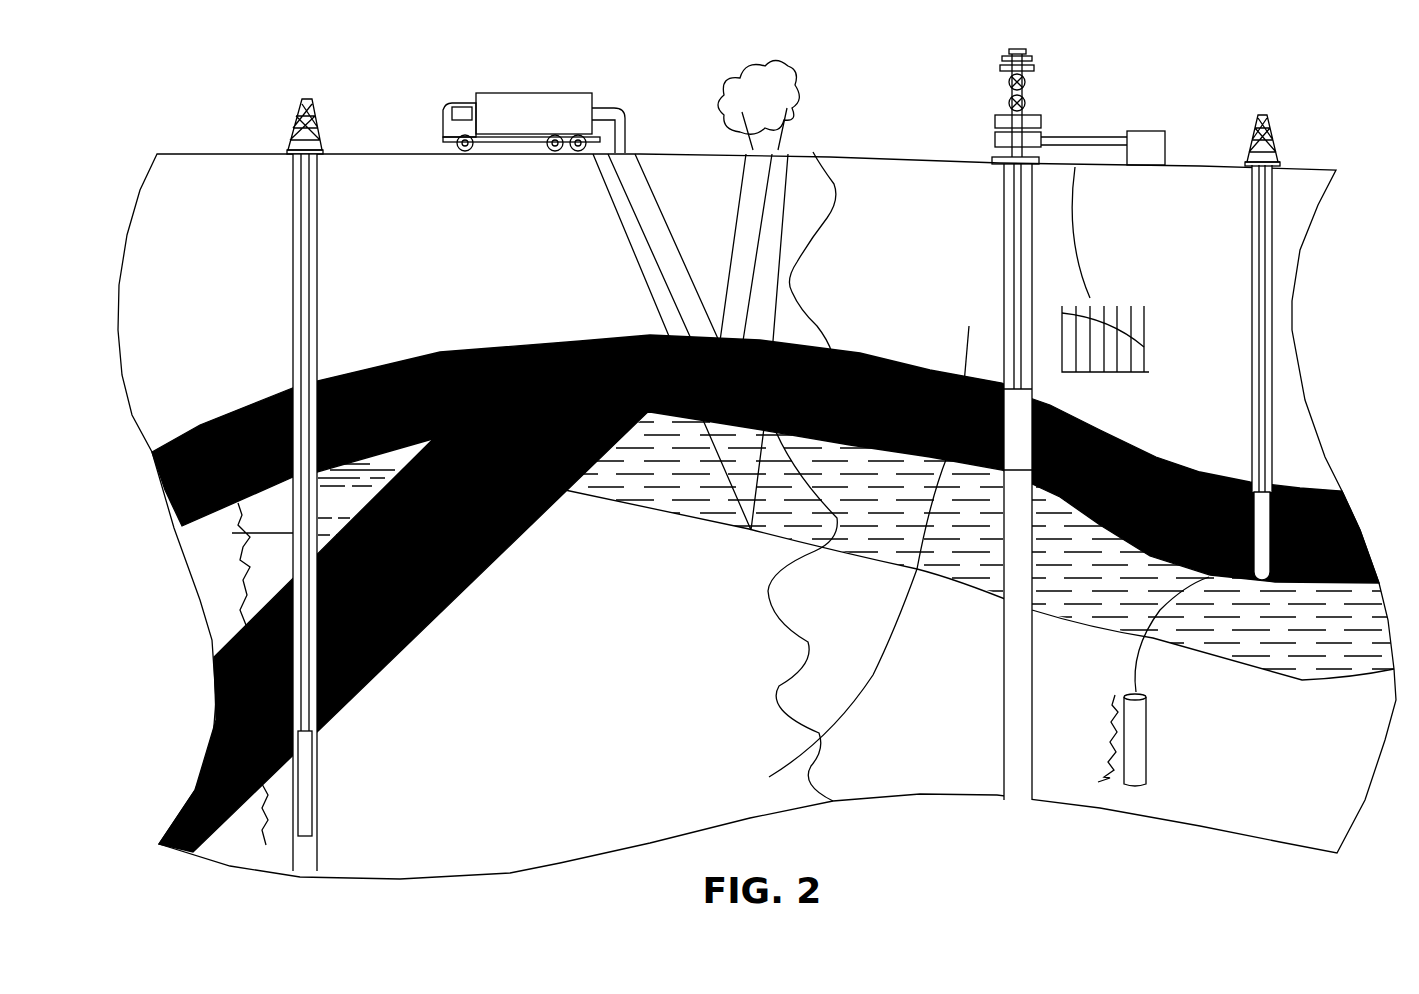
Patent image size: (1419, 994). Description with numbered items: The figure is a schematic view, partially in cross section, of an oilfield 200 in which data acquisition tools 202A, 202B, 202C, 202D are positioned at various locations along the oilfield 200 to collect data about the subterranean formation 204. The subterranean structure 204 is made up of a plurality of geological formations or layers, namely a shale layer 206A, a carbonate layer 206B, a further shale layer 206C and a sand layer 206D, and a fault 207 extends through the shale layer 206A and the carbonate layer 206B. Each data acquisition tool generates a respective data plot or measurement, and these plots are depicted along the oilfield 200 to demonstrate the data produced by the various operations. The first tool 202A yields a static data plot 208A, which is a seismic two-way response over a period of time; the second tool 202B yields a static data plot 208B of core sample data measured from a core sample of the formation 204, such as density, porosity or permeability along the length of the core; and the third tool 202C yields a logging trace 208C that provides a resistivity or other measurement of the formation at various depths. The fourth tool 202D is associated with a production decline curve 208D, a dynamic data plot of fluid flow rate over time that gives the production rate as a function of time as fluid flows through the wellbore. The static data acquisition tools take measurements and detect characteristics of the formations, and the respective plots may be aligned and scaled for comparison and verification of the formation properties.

The oilfield 200 is at (1198, 122).
The data acquisition tool 202A is at (507, 92).
The data acquisition tool 202B is at (1321, 488).
The data acquisition tool 202C is at (313, 784).
The data acquisition tool 202D is at (956, 455).
The subterranean formation 204 is at (615, 631).
The shale layer 206A is at (435, 409).
The carbonate layer 206B is at (370, 503).
The shale layer 206C is at (413, 537).
The sand layer 206D is at (461, 577).
The fault 207 is at (964, 352).
The static data plot 208A is at (793, 660).
The static data plot 208B is at (1112, 714).
The logging trace 208C is at (245, 568).
The production decline curve 208D is at (1110, 372).